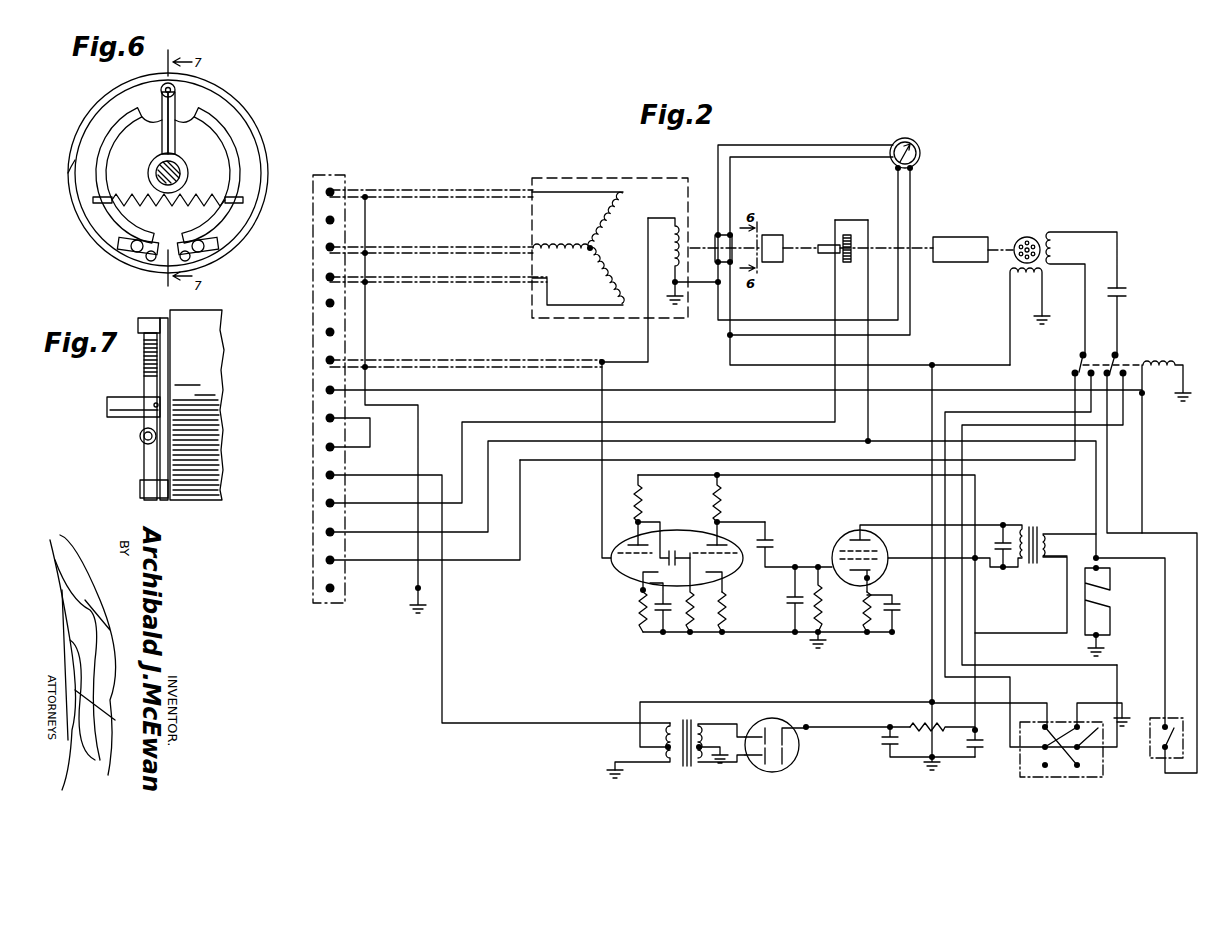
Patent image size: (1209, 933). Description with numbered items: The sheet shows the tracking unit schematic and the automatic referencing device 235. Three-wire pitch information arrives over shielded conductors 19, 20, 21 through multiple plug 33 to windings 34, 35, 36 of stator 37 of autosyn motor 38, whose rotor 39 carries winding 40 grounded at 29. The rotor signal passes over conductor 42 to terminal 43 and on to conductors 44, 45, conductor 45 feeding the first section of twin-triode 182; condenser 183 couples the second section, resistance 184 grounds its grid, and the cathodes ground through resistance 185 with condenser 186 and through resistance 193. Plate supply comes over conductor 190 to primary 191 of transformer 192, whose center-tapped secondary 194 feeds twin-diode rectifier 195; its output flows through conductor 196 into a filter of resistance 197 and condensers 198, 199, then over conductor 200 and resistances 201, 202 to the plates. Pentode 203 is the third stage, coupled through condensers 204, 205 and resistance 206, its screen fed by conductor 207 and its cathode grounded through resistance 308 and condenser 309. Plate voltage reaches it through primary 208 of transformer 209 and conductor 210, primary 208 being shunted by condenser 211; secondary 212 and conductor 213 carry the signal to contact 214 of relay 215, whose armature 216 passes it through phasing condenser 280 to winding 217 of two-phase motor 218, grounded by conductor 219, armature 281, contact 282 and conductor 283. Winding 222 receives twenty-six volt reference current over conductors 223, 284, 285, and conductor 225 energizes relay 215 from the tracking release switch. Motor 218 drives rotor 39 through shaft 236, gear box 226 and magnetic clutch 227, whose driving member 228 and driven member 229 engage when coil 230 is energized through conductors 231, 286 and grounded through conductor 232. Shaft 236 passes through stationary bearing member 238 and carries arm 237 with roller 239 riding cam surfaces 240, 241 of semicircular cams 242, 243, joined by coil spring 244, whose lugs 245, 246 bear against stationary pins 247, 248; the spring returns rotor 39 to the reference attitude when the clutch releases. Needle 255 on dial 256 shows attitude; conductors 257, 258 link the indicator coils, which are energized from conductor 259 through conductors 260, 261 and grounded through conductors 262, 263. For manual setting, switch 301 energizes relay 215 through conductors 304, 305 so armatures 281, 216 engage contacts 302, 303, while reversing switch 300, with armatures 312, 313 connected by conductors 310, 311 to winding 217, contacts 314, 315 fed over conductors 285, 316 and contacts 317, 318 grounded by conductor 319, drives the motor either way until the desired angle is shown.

In FIG. 2, the conductor 19 is at (582, 196).
In FIG. 2, the conductor 20 is at (526, 246).
In FIG. 2, the conductor 21 is at (592, 300).
In FIG. 2, the ground 29 is at (1040, 314).
In FIG. 2, the multiple plug 33 is at (340, 176).
In FIG. 2, the stator winding 34 is at (570, 240).
In FIG. 2, the stator winding 35 is at (608, 232).
In FIG. 2, the stator winding 36 is at (616, 258).
In FIG. 2, the stator 37 is at (585, 260).
In FIG. 2, the autosyn motor 38 is at (594, 233).
In FIG. 2, the rotor 39 is at (662, 236).
In FIG. 2, the rotor winding 40 is at (676, 238).
In FIG. 2, the conductor 42 is at (648, 354).
In FIG. 2, the terminal 43 is at (616, 360).
In FIG. 2, the conductor 44 is at (578, 358).
In FIG. 2, the conductor 45 is at (604, 384).
In FIG. 2, the twin-triode amplifier tube 182 is at (609, 569).
In FIG. 2, the condenser 183 is at (678, 540).
In FIG. 2, the resistance 184 is at (724, 578).
In FIG. 2, the resistance 185 is at (640, 606).
In FIG. 2, the condenser 186 is at (680, 580).
In FIG. 2, the conductor 190 is at (398, 476).
In FIG. 2, the primary winding 191 is at (664, 768).
In FIG. 2, the transformer 192 is at (687, 777).
In FIG. 2, the resistance 193 is at (728, 606).
In FIG. 2, the secondary winding 194 is at (696, 764).
In FIG. 2, the twin-diode rectifier tube 195 is at (780, 772).
In FIG. 2, the conductor 196 is at (860, 718).
In FIG. 2, the resistance 197 is at (926, 722).
In FIG. 2, the condenser 198 is at (884, 740).
In FIG. 2, the condenser 199 is at (976, 760).
In FIG. 2, the conductor 200 is at (806, 486).
In FIG. 2, the resistance 201 is at (646, 504).
In FIG. 2, the resistance 202 is at (724, 504).
In FIG. 2, the pentode 203 is at (848, 530).
In FIG. 2, the condenser 204 is at (770, 538).
In FIG. 2, the condenser 205 is at (792, 596).
In FIG. 2, the resistance 206 is at (822, 594).
In FIG. 2, the conductor 207 is at (916, 546).
In FIG. 2, the primary winding 208 is at (1026, 566).
In FIG. 2, the transformer 209 is at (1050, 527).
In FIG. 2, the conductor 210 is at (1018, 524).
In FIG. 2, the condenser 211 is at (1000, 548).
In FIG. 2, the secondary winding 212 is at (1050, 541).
In FIG. 2, the conductor 213 is at (1107, 528).
In FIG. 2, the contact 214 is at (1116, 362).
In FIG. 2, the double pole double throw relay 215 is at (1170, 362).
In FIG. 2, the armature 216 is at (1122, 360).
In FIG. 2, the winding 217 is at (1058, 250).
In FIG. 2, the two-phase motor 218 is at (1038, 222).
In FIG. 2, the conductor 219 is at (1085, 308).
In FIG. 2, the winding 222 is at (1010, 272).
In FIG. 2, the conductor 223 is at (982, 356).
In FIG. 2, the conductor 225 is at (774, 392).
In FIG. 2, the gear box 226 is at (972, 236).
In FIG. 2, the magnetic clutch 227 is at (840, 226).
In FIG. 2, the driving member 228 is at (850, 241).
In FIG. 2, the driven member 229 is at (820, 256).
In FIG. 2, the coil 230 is at (858, 270).
In FIG. 2, the conductor 231 is at (866, 304).
In FIG. 2, the conductor 232 is at (834, 304).
In FIG. 6, the automatic referencing device 235 is at (279, 123).
In FIG. 2, the automatic referencing device 235 is at (774, 227).
In FIG. 6, the shaft 236 is at (178, 168).
In FIG. 7, the shaft 236 is at (120, 420).
In FIG. 2, the shaft 236 is at (806, 240).
In FIG. 6, the arm 237 is at (158, 138).
In FIG. 6, the stationary bearing member 238 is at (96, 236).
In FIG. 7, the stationary bearing member 238 is at (206, 500).
In FIG. 6, the roller 239 is at (160, 86).
In FIG. 7, the roller 239 is at (138, 322).
In FIG. 6, the cam surface 240 is at (186, 124).
In FIG. 6, the cam surface 241 is at (139, 123).
In FIG. 6, the cam 242 is at (212, 108).
In FIG. 6, the cam 243 is at (102, 116).
In FIG. 6, the coil spring 244 is at (190, 198).
In FIG. 7, the coil spring 244 is at (141, 441).
In FIG. 6, the lug 245 is at (172, 238).
In FIG. 6, the lug 246 is at (158, 236).
In FIG. 6, the stationary pin 247 is at (190, 258).
In FIG. 6, the stationary pin 248 is at (146, 258).
In FIG. 2, the indicator needle 255 is at (920, 153).
In FIG. 2, the dial 256 is at (935, 128).
In FIG. 2, the conductor 257 is at (832, 144).
In FIG. 2, the conductor 258 is at (816, 158).
In FIG. 2, the conductor 259 is at (798, 362).
In FIG. 2, the conductor 260 is at (720, 322).
In FIG. 2, the conductor 261 is at (900, 300).
In FIG. 2, the conductor 262 is at (712, 274).
In FIG. 2, the conductor 263 is at (794, 320).
In FIG. 2, the phasing condenser 280 is at (1126, 292).
In FIG. 2, the armature 281 is at (1078, 360).
In FIG. 2, the contact 282 is at (1074, 375).
In FIG. 2, the conductor 283 is at (398, 560).
In FIG. 2, the conductor 284 is at (922, 412).
In FIG. 2, the conductor 285 is at (846, 690).
In FIG. 2, the conductor 286 is at (398, 532).
In FIG. 2, the reversing switch 300 is at (1079, 738).
In FIG. 2, the switch 301 is at (1152, 774).
In FIG. 2, the contact 302 is at (1074, 380).
In FIG. 2, the contact 303 is at (1165, 441).
In FIG. 2, the conductor 304 is at (1196, 630).
In FIG. 2, the conductor 305 is at (1156, 634).
In FIG. 2, the resistance 308 is at (866, 612).
In FIG. 2, the condenser 309 is at (892, 604).
In FIG. 2, the conductor 310 is at (1006, 677).
In FIG. 2, the conductor 311 is at (1034, 656).
In FIG. 2, the armature 312 is at (1076, 720).
In FIG. 2, the armature 313 is at (1104, 716).
In FIG. 2, the contact 314 is at (1044, 724).
In FIG. 2, the contact 315 is at (1080, 770).
In FIG. 2, the conductor 316 is at (964, 702).
In FIG. 2, the contact 317 is at (1044, 770).
In FIG. 2, the contact 318 is at (1076, 722).
In FIG. 2, the conductor 319 is at (1122, 706).